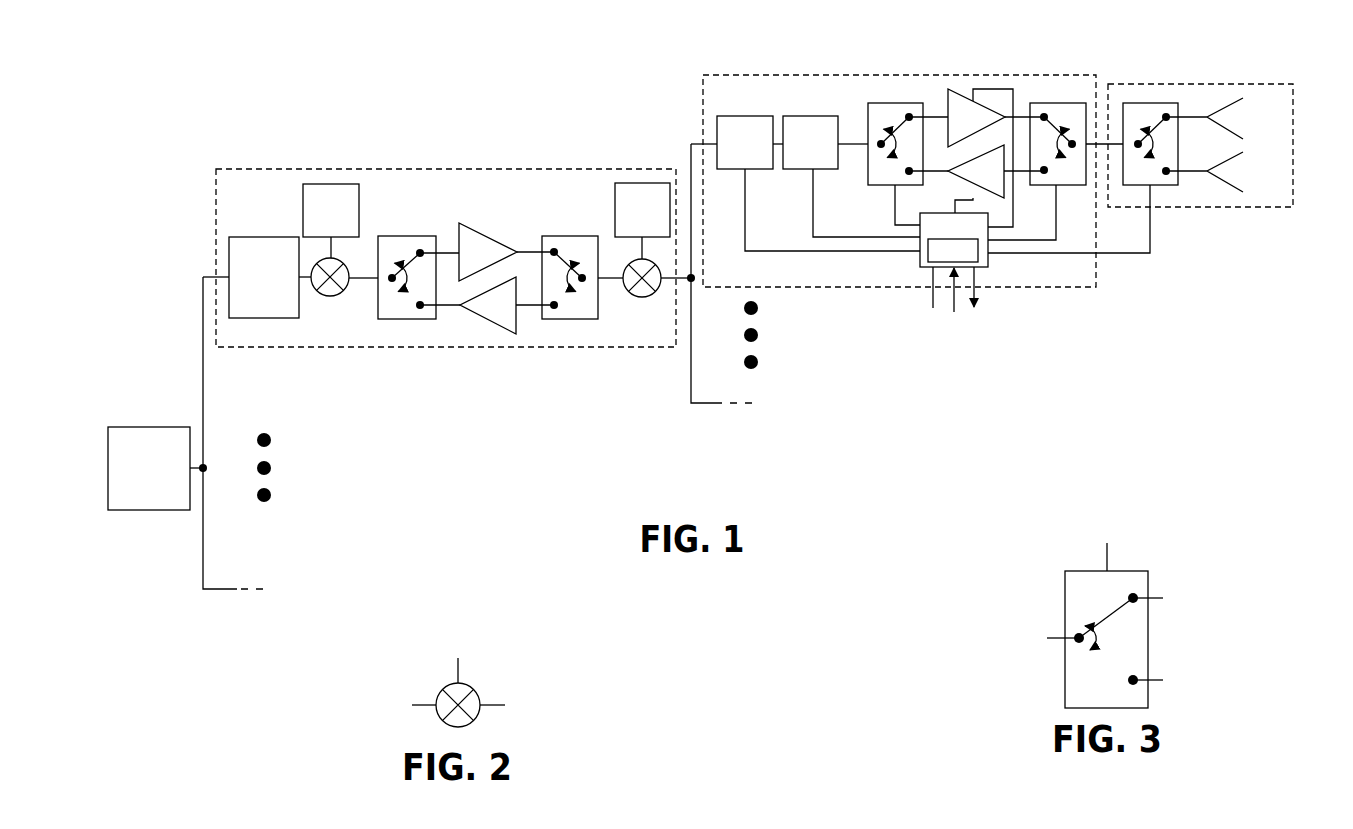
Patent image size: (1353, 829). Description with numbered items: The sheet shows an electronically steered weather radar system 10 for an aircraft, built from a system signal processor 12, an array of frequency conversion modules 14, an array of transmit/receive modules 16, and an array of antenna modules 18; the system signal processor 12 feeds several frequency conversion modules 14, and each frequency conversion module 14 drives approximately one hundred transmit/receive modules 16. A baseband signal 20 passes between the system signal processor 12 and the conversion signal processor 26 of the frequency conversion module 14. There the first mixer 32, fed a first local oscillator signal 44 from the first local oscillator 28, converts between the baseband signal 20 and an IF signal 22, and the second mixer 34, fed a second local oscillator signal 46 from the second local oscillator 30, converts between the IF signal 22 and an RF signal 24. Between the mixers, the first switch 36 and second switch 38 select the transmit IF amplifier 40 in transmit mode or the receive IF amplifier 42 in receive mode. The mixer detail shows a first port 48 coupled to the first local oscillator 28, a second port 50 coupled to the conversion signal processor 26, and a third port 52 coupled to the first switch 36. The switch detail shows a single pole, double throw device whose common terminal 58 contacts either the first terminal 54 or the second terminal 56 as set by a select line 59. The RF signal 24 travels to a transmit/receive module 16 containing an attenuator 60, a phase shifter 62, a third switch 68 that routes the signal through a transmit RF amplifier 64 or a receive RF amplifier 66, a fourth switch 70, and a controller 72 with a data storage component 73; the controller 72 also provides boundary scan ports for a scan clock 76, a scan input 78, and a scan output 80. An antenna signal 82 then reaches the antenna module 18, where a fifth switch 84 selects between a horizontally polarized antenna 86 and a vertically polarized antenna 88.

In FIG. 1, the electronically steered weather radar system 10 is at (622, 37).
In FIG. 1, the system signal processor 12 is at (150, 427).
In FIG. 1, the frequency conversion module 14 is at (447, 130).
In FIG. 1, the transmit/receive module 16 is at (886, 36).
In FIG. 1, the antenna module 18 is at (1206, 37).
In FIG. 1, the baseband signal 20 is at (305, 290).
In FIG. 1, the IF signal 22 is at (372, 290).
In FIG. 1, the RF signal 24 is at (675, 282).
In FIG. 1, the conversion signal processor 26 is at (253, 237).
In FIG. 1, the first local oscillator 28 is at (303, 207).
In FIG. 1, the second local oscillator 30 is at (615, 203).
In FIG. 1, the first mixer 32 is at (330, 296).
In FIG. 2, the first mixer 32 is at (457, 658).
In FIG. 1, the second mixer 34 is at (642, 297).
In FIG. 2, the second mixer 34 is at (414, 651).
In FIG. 1, the first switch 36 is at (415, 319).
In FIG. 3, the first switch 36 is at (1145, 595).
In FIG. 1, the second switch 38 is at (558, 319).
In FIG. 3, the second switch 38 is at (1145, 595).
In FIG. 1, the transmit IF amplifier 40 is at (478, 226).
In FIG. 1, the receive IF amplifier 42 is at (490, 334).
In FIG. 1, the first local oscillator signal 44 is at (333, 248).
In FIG. 1, the second local oscillator signal 46 is at (641, 251).
In FIG. 2, the first port 48 is at (462, 665).
In FIG. 2, the second port 50 is at (418, 700).
In FIG. 2, the third port 52 is at (494, 700).
In FIG. 3, the first terminal 54 is at (1163, 598).
In FIG. 3, the second terminal 56 is at (1163, 680).
In FIG. 3, the common terminal 58 is at (1047, 638).
In FIG. 3, the select line 59 is at (1103, 541).
In FIG. 1, the attenuator 60 is at (728, 116).
In FIG. 1, the phase shifter 62 is at (794, 116).
In FIG. 1, the transmit RF amplifier 64 is at (968, 99).
In FIG. 1, the receive RF amplifier 66 is at (997, 198).
In FIG. 1, the third switch 68 is at (890, 103).
In FIG. 3, the third switch 68 is at (1145, 595).
In FIG. 1, the fourth switch 70 is at (1063, 103).
In FIG. 3, the fourth switch 70 is at (1145, 595).
In FIG. 1, the controller 72 is at (918, 262).
In FIG. 1, the data storage component 73 is at (982, 259).
In FIG. 1, the scan clock 76 is at (931, 311).
In FIG. 1, the scan input 78 is at (954, 315).
In FIG. 1, the scan output 80 is at (975, 310).
In FIG. 1, the antenna signal 82 is at (1100, 138).
In FIG. 1, the fifth switch 84 is at (1166, 187).
In FIG. 3, the fifth switch 84 is at (1176, 530).
In FIG. 1, the horizontally polarized antenna 86 is at (1270, 102).
In FIG. 1, the vertically polarized antenna 88 is at (1265, 190).